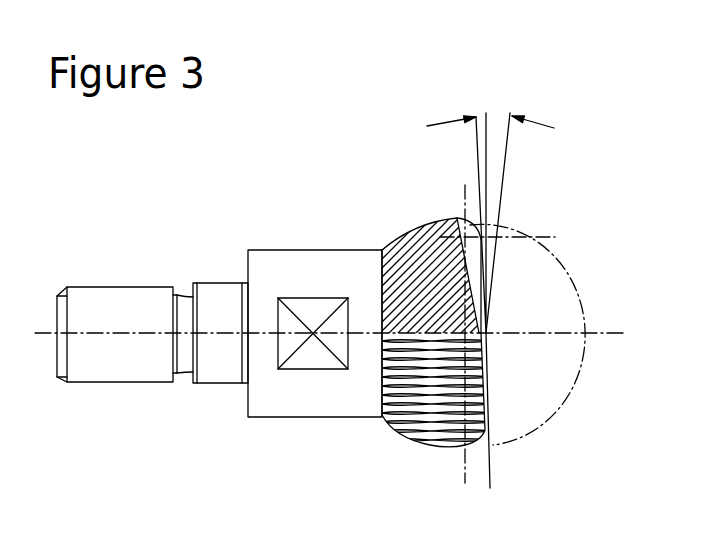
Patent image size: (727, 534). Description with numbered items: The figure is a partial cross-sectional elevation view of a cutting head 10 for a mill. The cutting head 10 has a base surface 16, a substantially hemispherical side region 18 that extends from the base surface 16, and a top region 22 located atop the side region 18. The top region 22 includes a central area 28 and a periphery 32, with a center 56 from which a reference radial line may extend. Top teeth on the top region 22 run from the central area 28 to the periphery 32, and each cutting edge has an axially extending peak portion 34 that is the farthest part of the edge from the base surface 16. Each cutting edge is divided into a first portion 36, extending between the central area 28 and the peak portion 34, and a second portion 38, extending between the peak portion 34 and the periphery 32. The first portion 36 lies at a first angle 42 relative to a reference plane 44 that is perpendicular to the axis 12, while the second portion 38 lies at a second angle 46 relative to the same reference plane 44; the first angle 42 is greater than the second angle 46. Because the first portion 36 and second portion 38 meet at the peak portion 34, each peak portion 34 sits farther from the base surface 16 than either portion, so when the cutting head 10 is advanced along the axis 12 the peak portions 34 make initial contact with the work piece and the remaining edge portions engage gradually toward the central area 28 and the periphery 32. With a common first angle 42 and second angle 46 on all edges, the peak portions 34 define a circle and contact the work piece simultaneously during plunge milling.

The cutting head 10 is at (247, 210).
The axis 12 is at (625, 332).
The base surface 16 is at (378, 263).
The side region 18 is at (430, 222).
The top region 22 is at (518, 363).
The central area 28 is at (483, 357).
The periphery 32 is at (505, 223).
The peak portion 34 is at (487, 268).
The first portion 36 is at (483, 373).
The second portion 38 is at (487, 418).
The first angle 42 is at (495, 120).
The reference plane 44 is at (486, 110).
The second angle 46 is at (475, 112).
The center 56 is at (488, 330).